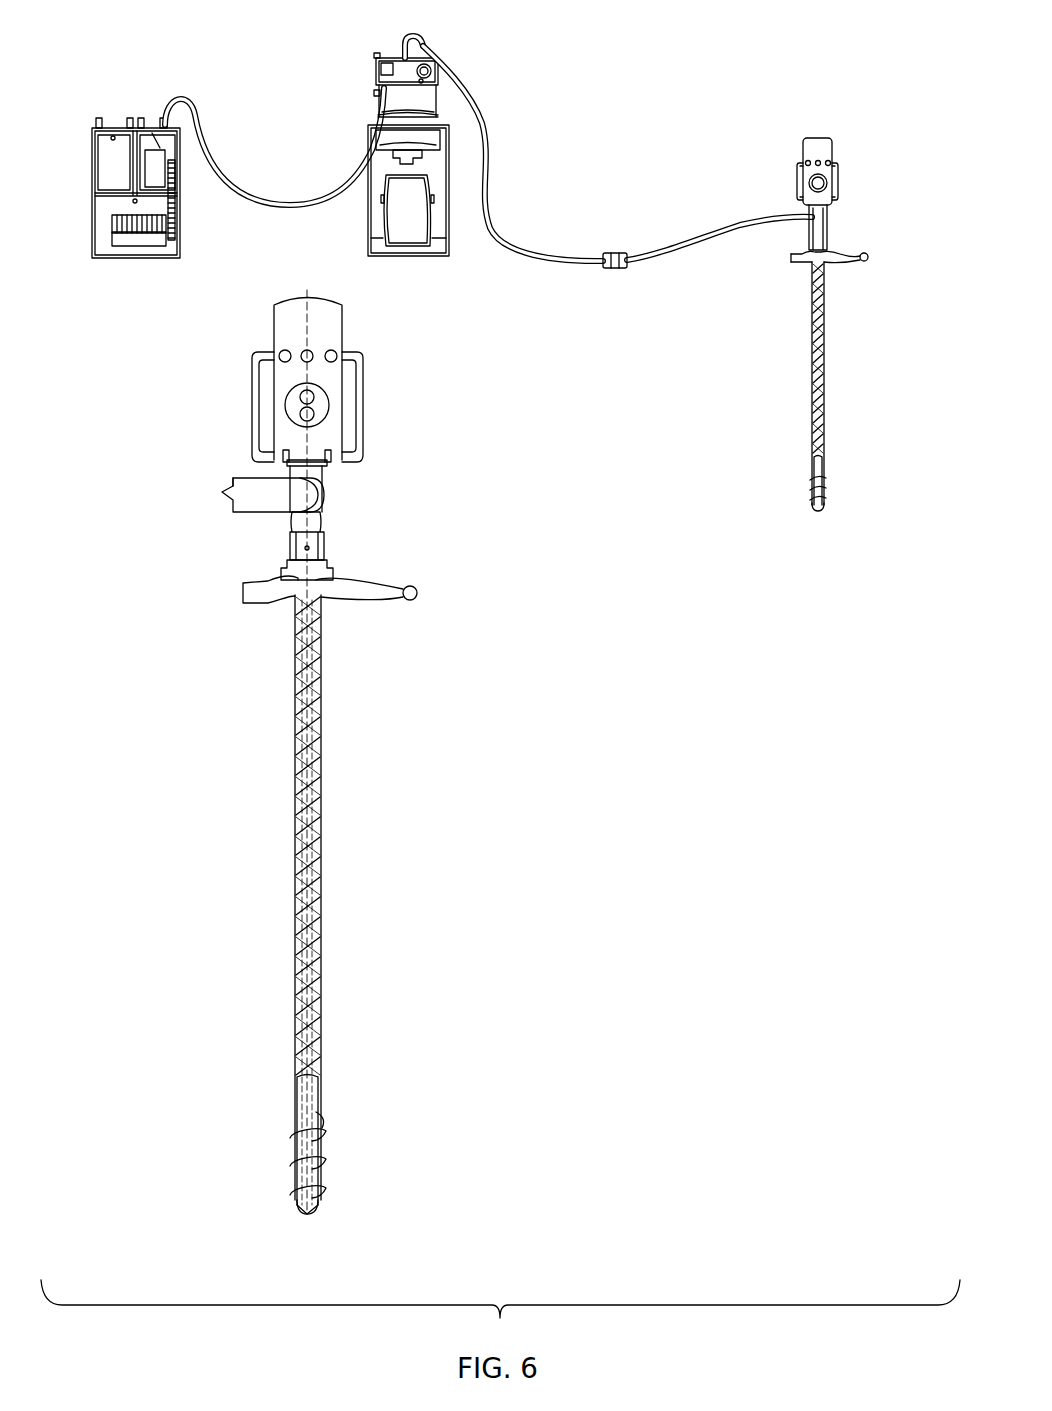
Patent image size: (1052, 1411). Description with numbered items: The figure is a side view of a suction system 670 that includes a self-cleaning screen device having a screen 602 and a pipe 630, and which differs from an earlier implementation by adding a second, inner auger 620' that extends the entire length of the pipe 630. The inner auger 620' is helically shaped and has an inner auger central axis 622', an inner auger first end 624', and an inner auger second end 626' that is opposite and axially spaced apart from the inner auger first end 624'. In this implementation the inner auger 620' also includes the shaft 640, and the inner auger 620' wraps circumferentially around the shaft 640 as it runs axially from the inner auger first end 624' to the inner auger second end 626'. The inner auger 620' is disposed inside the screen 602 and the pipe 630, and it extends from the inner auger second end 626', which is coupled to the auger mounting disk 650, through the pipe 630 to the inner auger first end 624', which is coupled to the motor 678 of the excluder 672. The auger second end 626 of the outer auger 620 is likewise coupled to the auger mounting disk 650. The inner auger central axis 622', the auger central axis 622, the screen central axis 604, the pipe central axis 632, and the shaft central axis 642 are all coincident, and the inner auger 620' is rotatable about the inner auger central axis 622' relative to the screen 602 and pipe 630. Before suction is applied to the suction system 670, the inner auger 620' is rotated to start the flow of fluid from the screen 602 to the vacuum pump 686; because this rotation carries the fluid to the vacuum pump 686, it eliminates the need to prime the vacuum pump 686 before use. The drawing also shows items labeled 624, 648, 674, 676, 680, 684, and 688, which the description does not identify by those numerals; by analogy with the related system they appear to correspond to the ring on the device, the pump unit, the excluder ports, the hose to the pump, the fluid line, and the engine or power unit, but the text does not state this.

The screen 602 is at (297, 1087).
The screen central axis 604 is at (183, 1227).
The auger 620 is at (558, 809).
The inner auger 620' is at (611, 669).
The auger central axis 622 is at (183, 1227).
The inner auger central axis 622' is at (183, 1227).
The ring 624 is at (390, 1091).
The inner auger first end 624' is at (307, 605).
The auger second end 626 is at (277, 1178).
The inner auger second end 626' is at (380, 1164).
The pipe 630 is at (324, 890).
The pipe central axis 632 is at (183, 1227).
The shaft 640 is at (295, 862).
The shaft central axis 642 is at (183, 1227).
The pump 648 is at (350, 62).
The auger mounting disk 650 is at (320, 1212).
The suction system 670 is at (812, 134).
The excluder 672 is at (843, 185).
The hub 674 is at (832, 251).
The fluid tube 676 is at (816, 214).
The motor 678 is at (825, 136).
The cable 680 is at (676, 246).
The fluid line 684 is at (374, 229).
The vacuum pump 686 is at (108, 159).
The battery 688 is at (112, 238).